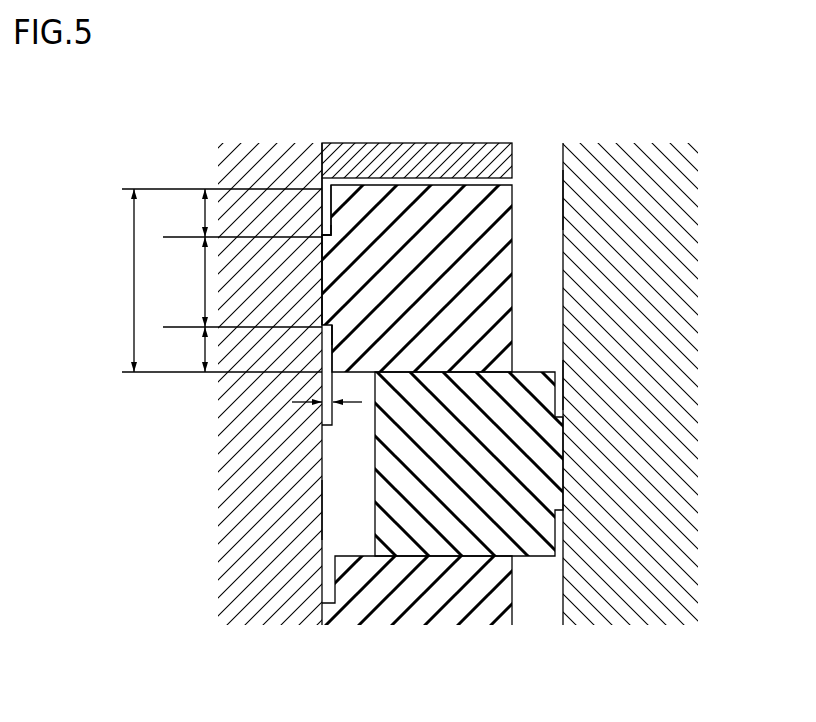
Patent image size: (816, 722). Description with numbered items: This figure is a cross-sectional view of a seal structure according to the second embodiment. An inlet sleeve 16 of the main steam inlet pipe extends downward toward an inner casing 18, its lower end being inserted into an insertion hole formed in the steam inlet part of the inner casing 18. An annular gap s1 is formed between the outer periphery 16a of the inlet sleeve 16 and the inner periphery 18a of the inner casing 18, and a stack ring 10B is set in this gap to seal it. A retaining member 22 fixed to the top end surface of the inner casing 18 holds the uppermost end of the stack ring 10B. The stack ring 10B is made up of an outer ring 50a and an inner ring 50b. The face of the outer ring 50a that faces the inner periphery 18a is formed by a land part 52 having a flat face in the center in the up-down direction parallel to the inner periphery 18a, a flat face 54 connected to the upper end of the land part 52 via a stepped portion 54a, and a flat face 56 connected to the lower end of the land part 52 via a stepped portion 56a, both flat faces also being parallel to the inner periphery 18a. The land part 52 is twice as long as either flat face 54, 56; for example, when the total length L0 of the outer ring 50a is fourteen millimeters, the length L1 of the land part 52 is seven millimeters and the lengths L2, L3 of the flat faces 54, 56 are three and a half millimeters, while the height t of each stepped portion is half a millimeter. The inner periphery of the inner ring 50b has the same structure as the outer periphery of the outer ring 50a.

The stack ring 10B is at (587, 385).
The inlet sleeve 16 is at (627, 330).
The outer periphery of the inlet sleeve 16a is at (563, 192).
The inner casing 18 is at (282, 495).
The inner periphery of the inner casing 18a is at (322, 490).
The retaining member 22 is at (436, 153).
The outer ring 50a is at (465, 208).
The inner ring 50b is at (540, 484).
The land part 52 is at (322, 292).
The flat face 54 is at (327, 208).
The stepped portion 54a is at (331, 232).
The flat face 56 is at (330, 357).
The stepped portion 56a is at (334, 336).
The annular gap s1 is at (556, 268).
The height of the stepped portion t is at (327, 414).
The total length of the outer ring L0 is at (215, 280).
The length of the land part L1 is at (242, 282).
The length of the flat face L2 is at (242, 213).
The length of the flat face L3 is at (191, 349).